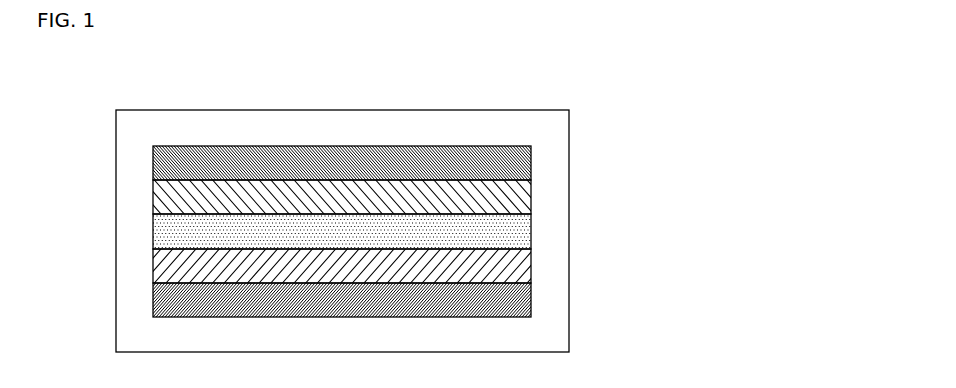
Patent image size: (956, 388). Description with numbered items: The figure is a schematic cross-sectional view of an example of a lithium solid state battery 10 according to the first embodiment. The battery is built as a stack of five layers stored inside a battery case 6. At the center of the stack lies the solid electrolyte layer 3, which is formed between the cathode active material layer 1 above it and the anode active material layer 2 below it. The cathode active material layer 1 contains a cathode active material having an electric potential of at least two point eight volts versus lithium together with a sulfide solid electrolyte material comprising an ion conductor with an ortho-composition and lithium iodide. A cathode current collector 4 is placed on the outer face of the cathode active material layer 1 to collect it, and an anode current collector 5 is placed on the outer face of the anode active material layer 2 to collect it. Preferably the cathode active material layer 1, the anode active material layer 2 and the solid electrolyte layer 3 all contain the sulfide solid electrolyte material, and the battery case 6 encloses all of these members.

The lithium solid state battery 10 is at (557, 78).
The battery case 6 is at (548, 125).
The cathode current collector 4 is at (520, 158).
The cathode active material layer 1 is at (520, 191).
The solid electrolyte layer 3 is at (520, 226).
The anode active material layer 2 is at (520, 259).
The anode current collector 5 is at (520, 293).